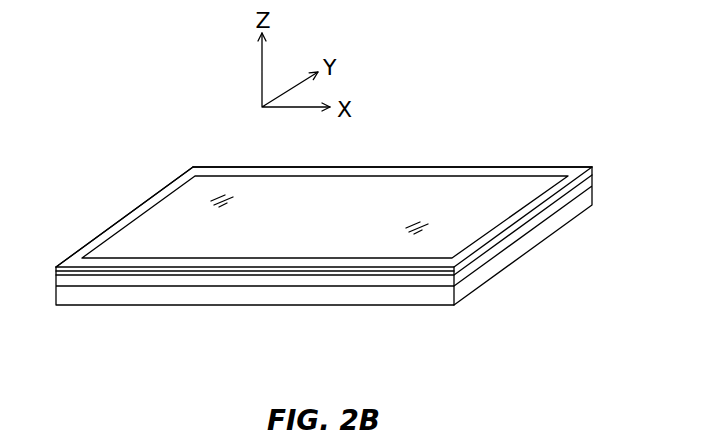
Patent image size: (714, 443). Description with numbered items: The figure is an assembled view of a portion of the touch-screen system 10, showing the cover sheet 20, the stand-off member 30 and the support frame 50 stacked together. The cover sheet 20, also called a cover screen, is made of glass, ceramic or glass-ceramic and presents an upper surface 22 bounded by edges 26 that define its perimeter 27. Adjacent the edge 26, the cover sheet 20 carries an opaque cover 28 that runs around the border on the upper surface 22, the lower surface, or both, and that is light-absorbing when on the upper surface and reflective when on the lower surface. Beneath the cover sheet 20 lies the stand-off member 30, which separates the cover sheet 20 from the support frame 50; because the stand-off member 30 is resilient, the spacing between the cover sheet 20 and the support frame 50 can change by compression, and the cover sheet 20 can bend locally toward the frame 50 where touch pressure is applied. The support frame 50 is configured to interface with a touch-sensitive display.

The touch-screen system 10 is at (143, 108).
The cover sheet 20 is at (447, 195).
The upper surface 22 is at (513, 185).
The edges 26 is at (100, 235).
The perimeter 27 is at (133, 200).
The cover 28 is at (400, 173).
The stand-off member 30 is at (570, 195).
The support frame 50 is at (495, 265).